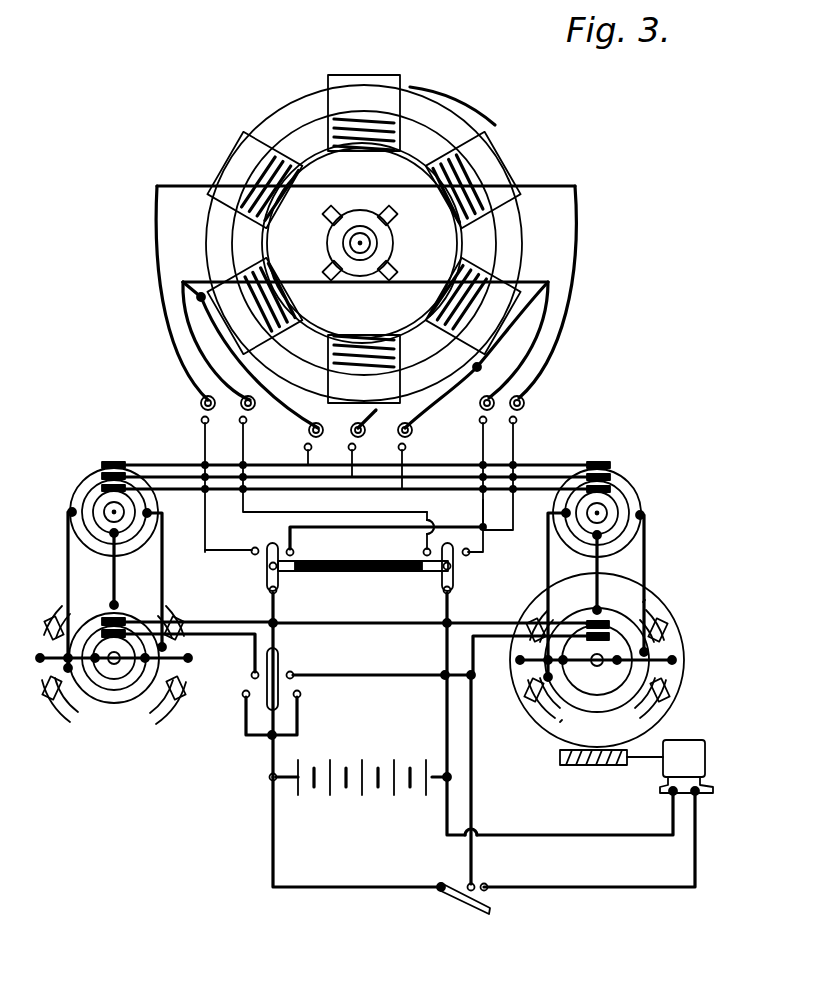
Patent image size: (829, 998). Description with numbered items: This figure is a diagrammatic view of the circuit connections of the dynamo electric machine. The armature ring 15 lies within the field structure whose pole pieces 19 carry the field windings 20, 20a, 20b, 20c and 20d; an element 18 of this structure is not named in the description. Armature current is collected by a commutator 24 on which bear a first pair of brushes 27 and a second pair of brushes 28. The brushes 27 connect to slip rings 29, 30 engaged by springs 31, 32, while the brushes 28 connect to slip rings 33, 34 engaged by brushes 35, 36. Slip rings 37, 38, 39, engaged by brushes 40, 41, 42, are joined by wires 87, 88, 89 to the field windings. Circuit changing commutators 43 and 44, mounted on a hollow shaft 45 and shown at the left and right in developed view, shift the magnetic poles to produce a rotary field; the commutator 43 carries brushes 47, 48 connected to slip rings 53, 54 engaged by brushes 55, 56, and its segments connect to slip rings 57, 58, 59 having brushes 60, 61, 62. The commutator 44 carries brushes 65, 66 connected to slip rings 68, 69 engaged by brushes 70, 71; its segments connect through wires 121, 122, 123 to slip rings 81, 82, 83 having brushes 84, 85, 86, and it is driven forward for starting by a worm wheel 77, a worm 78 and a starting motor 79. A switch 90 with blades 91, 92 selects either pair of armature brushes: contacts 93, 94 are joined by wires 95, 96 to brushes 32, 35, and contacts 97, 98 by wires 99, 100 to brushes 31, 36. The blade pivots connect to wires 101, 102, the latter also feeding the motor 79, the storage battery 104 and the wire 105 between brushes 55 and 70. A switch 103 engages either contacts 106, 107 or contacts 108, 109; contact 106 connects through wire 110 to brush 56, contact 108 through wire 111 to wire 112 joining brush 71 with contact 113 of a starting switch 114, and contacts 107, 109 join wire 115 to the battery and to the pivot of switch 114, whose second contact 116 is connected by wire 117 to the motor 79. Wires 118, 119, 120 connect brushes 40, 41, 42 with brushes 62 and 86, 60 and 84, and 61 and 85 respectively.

The armature ring 15 is at (350, 152).
The field frame 18 is at (292, 100).
The pole pieces 19 is at (366, 130).
The field winding 20 is at (440, 105).
The field winding 20a is at (480, 150).
The field winding 20b is at (490, 272).
The field winding 20c is at (352, 360).
The field winding 20d is at (268, 296).
The commutator 24 is at (385, 240).
The first pair of brushes 27 is at (386, 212).
The second pair of brushes 28 is at (335, 212).
The slip ring 29 is at (244, 400).
The slip ring 30 is at (200, 400).
The spring 31 is at (337, 483).
The spring 32 is at (227, 484).
The slip ring 33 is at (524, 400).
The slip ring 34 is at (492, 398).
The brush 35 is at (518, 420).
The brush 36 is at (488, 485).
The slip ring 37 is at (309, 430).
The slip ring 38 is at (339, 457).
The slip ring 39 is at (412, 427).
The brush 40 is at (298, 450).
The brush 41 is at (365, 430).
The brush 42 is at (407, 448).
The circuit changing commutator 43 is at (96, 600).
The circuit changing commutator 44 is at (660, 710).
The hollow shaft 45 is at (114, 665).
The brush 47 is at (144, 690).
The brush 48 is at (52, 628).
The slip ring 53 is at (60, 690).
The slip ring 54 is at (100, 680).
The brush 55 is at (100, 610).
The brush 56 is at (95, 625).
The slip ring 57 is at (70, 503).
The slip ring 58 is at (135, 538).
The slip ring 59 is at (130, 524).
The brush 60 is at (100, 464).
The brush 61 is at (100, 476).
The brush 62 is at (100, 488).
The brush 65 is at (548, 690).
The brush 66 is at (640, 632).
The slip ring 68 is at (630, 680).
The slip ring 69 is at (640, 692).
The brush 70 is at (620, 622).
The brush 71 is at (612, 637).
The worm wheel 77 is at (560, 722).
The worm 78 is at (603, 765).
The starting motor 79 is at (700, 752).
The slip ring 81 is at (650, 525).
The slip ring 82 is at (625, 540).
The slip ring 83 is at (630, 508).
The brush 84 is at (612, 466).
The brush 85 is at (612, 478).
The brush 86 is at (612, 490).
The wire 87 is at (230, 352).
The wire 88 is at (490, 366).
The wire 89 is at (366, 80).
The switch 90 is at (363, 576).
The switch blade 91 is at (266, 574).
The switch blade 92 is at (452, 578).
The contact 93 is at (262, 546).
The contact 94 is at (385, 541).
The wire 95 is at (205, 555).
The wire 96 is at (434, 526).
The contact 97 is at (422, 550).
The contact 98 is at (468, 556).
The wire 99 is at (395, 512).
The wire 100 is at (483, 510).
The wire 101 is at (270, 590).
The wire 102 is at (440, 623).
The switch 103 is at (280, 672).
The storage battery 104 is at (363, 788).
The wire 105 is at (245, 622).
The contact 106 is at (251, 675).
The contact 107 is at (242, 694).
The contact 108 is at (296, 674).
The contact 109 is at (302, 693).
The wire 110 is at (235, 640).
The wire 111 is at (430, 675).
The wire 112 is at (471, 790).
The contact 113 is at (470, 882).
The starting switch 114 is at (450, 902).
The wire 115 is at (273, 812).
The contact 116 is at (488, 884).
The wire 117 is at (648, 887).
The wire 118 is at (160, 489).
The wire 119 is at (168, 477).
The wire 120 is at (150, 465).
The wire 121 is at (645, 600).
The wire 122 is at (546, 562).
The wire 123 is at (620, 598).